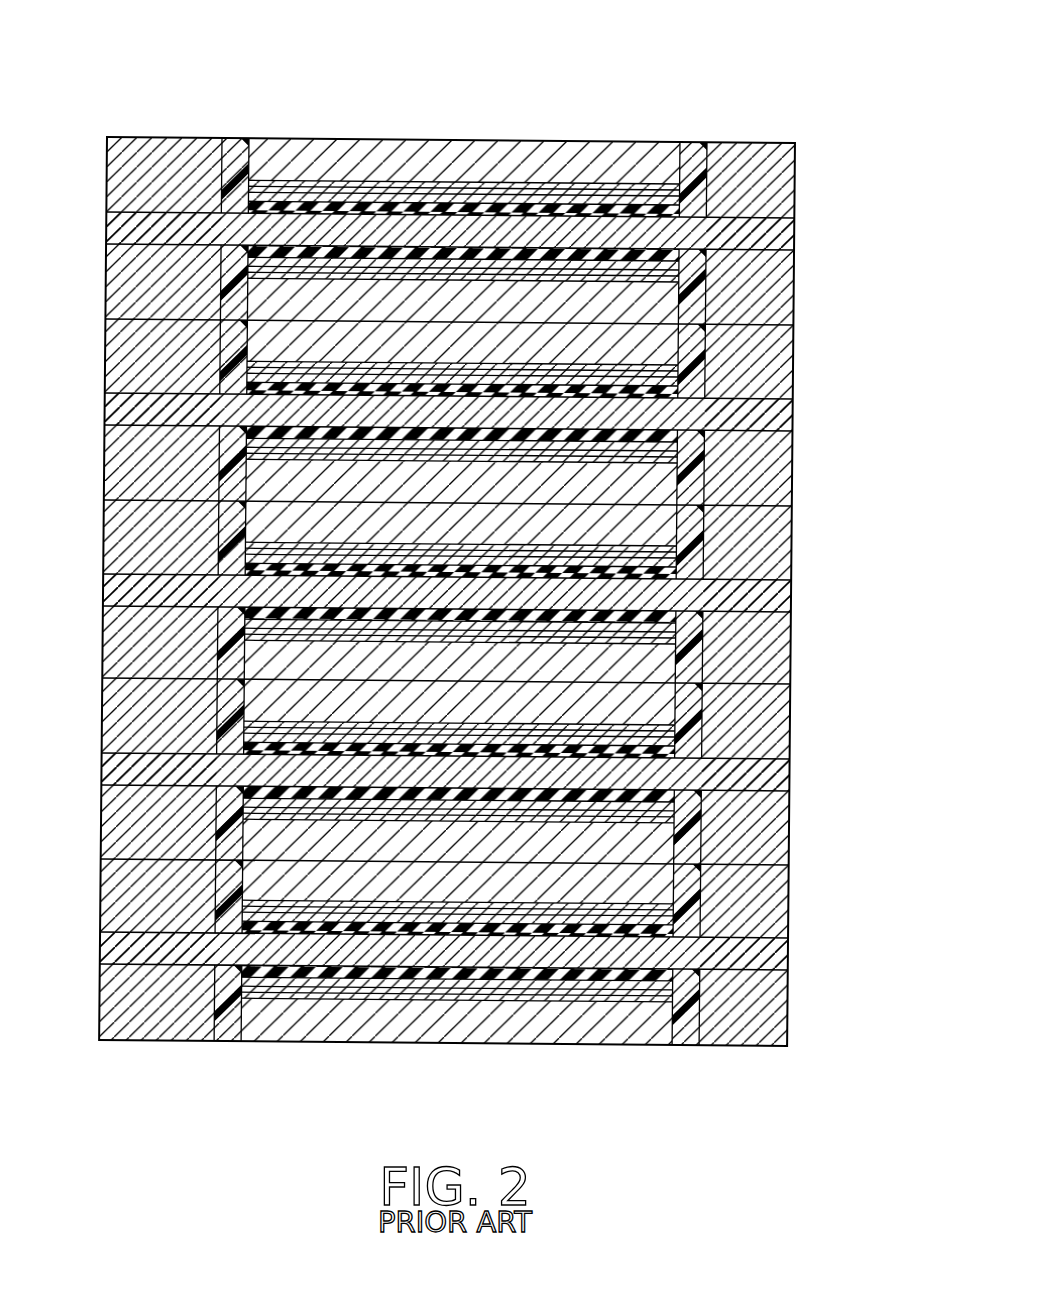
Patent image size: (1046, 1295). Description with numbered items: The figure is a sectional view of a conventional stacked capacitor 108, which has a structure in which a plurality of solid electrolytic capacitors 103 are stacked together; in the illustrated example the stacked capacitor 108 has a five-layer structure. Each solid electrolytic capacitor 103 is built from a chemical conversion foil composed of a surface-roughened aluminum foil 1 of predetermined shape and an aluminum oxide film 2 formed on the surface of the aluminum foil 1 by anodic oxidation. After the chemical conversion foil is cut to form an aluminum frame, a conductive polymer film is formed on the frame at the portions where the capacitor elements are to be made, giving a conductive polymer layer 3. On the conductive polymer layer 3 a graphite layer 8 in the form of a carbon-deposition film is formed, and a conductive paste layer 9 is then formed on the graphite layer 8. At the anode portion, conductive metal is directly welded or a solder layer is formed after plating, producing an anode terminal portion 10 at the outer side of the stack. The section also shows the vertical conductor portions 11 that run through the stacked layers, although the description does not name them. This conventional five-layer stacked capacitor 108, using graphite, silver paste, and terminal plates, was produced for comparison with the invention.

The stacked capacitor 108 is at (480, 85).
The aluminum foil 1 is at (115, 945).
The anode terminal portion 10 is at (748, 141).
The via conductor 11 is at (233, 145).
The solid electrolytic capacitor 103 is at (797, 229).
The aluminum oxide film 2 is at (295, 972).
The conductive polymer layer 3 is at (612, 985).
The graphite layer 8 is at (403, 997).
The conductive paste layer 9 is at (505, 1018).